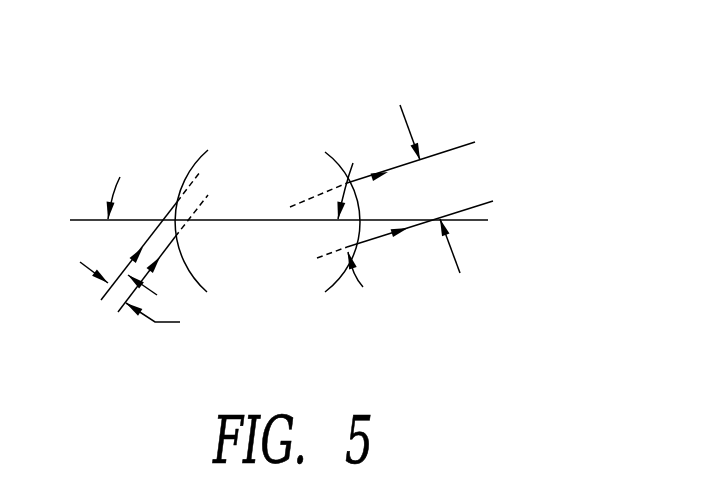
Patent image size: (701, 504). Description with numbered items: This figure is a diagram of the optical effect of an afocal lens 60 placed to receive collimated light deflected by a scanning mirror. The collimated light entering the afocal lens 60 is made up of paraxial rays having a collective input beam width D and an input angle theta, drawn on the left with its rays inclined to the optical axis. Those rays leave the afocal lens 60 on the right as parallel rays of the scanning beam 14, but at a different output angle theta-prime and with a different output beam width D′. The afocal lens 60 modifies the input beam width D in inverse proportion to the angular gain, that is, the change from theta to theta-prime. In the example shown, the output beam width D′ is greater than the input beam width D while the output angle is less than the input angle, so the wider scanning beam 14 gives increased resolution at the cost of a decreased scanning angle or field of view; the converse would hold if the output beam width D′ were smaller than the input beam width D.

The afocal lens 60 is at (279, 188).
The scanning beam 14 is at (391, 160).
The input beam width D is at (143, 301).
The output beam width D′ is at (445, 150).